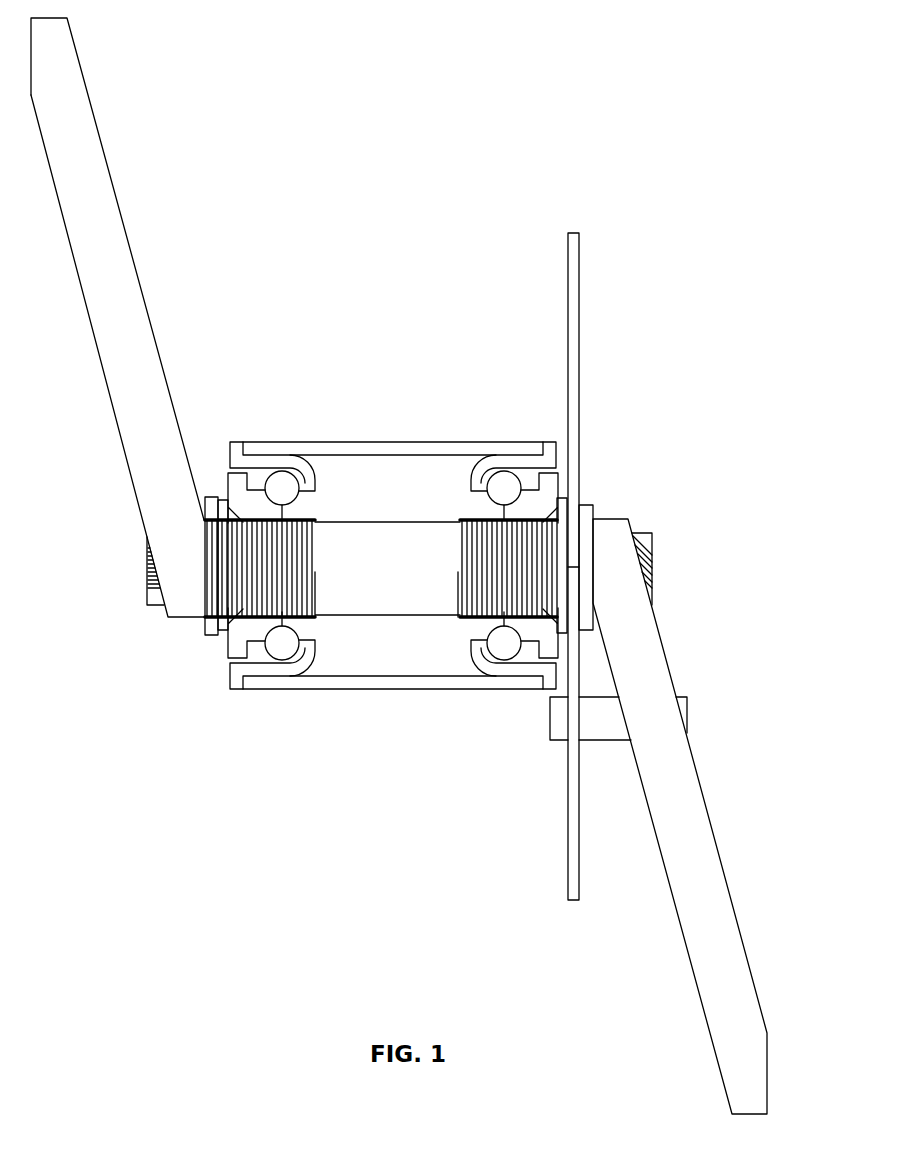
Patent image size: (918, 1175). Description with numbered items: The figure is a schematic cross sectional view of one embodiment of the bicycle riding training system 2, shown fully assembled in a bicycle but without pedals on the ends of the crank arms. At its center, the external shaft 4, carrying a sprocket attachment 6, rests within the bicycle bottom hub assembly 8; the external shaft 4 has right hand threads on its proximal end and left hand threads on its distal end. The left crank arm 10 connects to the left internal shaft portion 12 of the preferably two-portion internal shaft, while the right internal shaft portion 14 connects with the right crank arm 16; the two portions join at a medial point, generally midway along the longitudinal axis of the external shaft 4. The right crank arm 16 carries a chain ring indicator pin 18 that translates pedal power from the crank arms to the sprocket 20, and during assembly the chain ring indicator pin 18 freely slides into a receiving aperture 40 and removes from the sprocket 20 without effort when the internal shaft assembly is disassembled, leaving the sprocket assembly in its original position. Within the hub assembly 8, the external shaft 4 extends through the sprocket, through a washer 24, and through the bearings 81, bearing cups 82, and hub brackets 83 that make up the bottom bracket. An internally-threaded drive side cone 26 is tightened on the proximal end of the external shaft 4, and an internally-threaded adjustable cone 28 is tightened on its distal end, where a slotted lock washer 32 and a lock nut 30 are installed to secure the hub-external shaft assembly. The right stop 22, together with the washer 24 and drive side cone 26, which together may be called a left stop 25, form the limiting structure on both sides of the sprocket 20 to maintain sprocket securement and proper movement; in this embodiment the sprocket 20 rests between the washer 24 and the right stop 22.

The bicycle riding training system 2 is at (393, 521).
The external shaft 4 is at (392, 587).
The sprocket attachment 6 is at (625, 558).
The bottom hub assembly 8 is at (367, 444).
The left crank arm 10 is at (118, 344).
The left internal shaft portion 12 is at (147, 597).
The right internal shaft portion 14 is at (645, 543).
The right crank arm 16 is at (683, 826).
The chain ring indicator pin 18 is at (607, 725).
The sprocket 20 is at (573, 260).
The right stop 22 is at (588, 513).
The washer 24 is at (566, 488).
The left stop 25 is at (533, 498).
The drive side cone 26 is at (561, 497).
The adjustable cone 28 is at (226, 500).
The lock nut 30 is at (207, 497).
The slotted lock washer 32 is at (216, 500).
The receiving aperture 40 is at (567, 718).
The bearings 81 is at (502, 490).
The bearing cups 82 is at (478, 477).
The hub brackets 83 is at (442, 448).